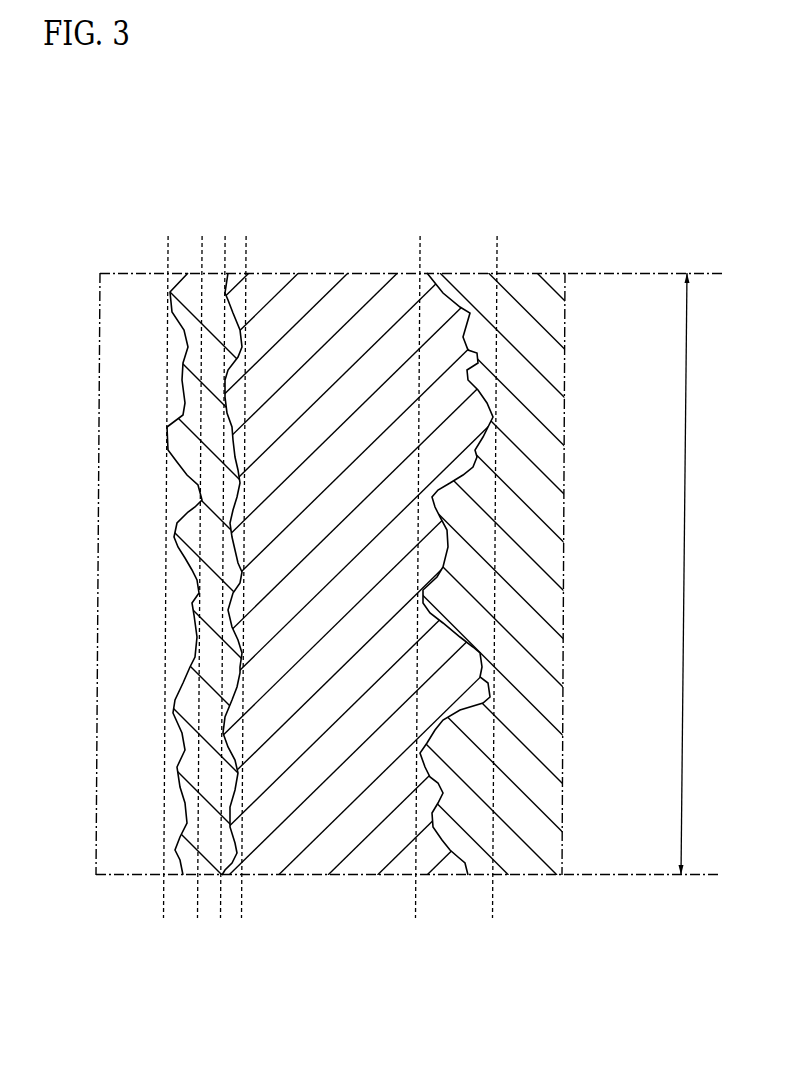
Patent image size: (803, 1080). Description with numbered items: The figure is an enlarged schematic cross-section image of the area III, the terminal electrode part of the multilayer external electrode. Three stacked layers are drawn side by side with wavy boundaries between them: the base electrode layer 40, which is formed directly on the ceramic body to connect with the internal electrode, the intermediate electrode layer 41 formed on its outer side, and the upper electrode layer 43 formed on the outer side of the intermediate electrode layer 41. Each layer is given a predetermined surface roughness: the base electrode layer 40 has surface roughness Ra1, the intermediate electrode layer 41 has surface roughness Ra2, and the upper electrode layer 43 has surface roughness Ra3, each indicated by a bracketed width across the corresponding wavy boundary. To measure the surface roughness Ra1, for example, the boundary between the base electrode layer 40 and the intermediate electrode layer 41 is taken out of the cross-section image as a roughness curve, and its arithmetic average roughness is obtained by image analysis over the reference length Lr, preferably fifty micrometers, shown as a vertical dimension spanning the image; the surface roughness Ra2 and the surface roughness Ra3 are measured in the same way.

The base electrode layer 40 is at (528, 534).
The intermediate electrode layer 41 is at (340, 353).
The upper electrode layer 43 is at (193, 621).
The area III is at (98, 441).
The surface roughness of the base electrode layer Ra1 is at (497, 252).
The surface roughness of the intermediate electrode layer Ra2 is at (246, 252).
The surface roughness of the upper electrode layer Ra3 is at (202, 252).
The reference length Lr is at (698, 574).